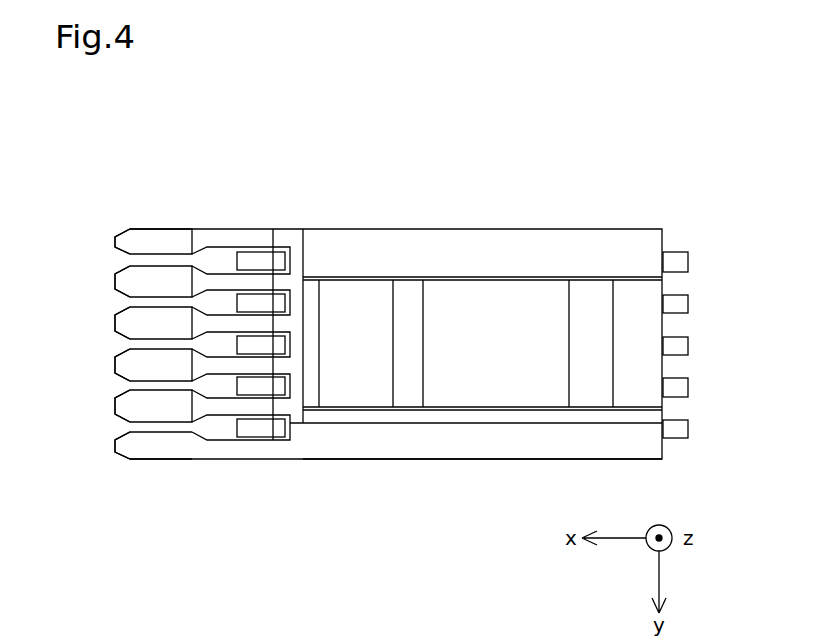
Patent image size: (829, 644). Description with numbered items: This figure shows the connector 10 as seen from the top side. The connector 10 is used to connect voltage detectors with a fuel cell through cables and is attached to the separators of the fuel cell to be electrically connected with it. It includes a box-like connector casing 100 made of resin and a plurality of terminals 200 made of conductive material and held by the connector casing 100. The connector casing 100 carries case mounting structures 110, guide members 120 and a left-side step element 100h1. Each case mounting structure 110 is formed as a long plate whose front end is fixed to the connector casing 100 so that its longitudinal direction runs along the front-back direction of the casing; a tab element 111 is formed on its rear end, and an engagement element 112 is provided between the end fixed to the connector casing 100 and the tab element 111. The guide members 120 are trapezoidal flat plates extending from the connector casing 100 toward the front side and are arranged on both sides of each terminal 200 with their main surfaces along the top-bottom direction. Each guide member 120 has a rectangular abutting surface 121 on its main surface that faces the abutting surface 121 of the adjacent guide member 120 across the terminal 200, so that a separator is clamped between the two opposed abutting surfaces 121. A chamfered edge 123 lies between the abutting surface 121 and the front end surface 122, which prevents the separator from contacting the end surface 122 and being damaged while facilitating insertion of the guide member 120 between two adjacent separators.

The connector 10 is at (674, 121).
The connector casing 100 is at (651, 228).
The left-side step element 100h1 is at (427, 442).
The case mounting structure 110 is at (512, 297).
The tab element 111 is at (637, 297).
The engagement element 112 is at (408, 297).
The guide member 120 is at (163, 240).
The abutting surface 121 is at (138, 256).
The end surface 122 is at (115, 238).
The chamfered edge 123 is at (120, 251).
The terminal 200 is at (258, 258).